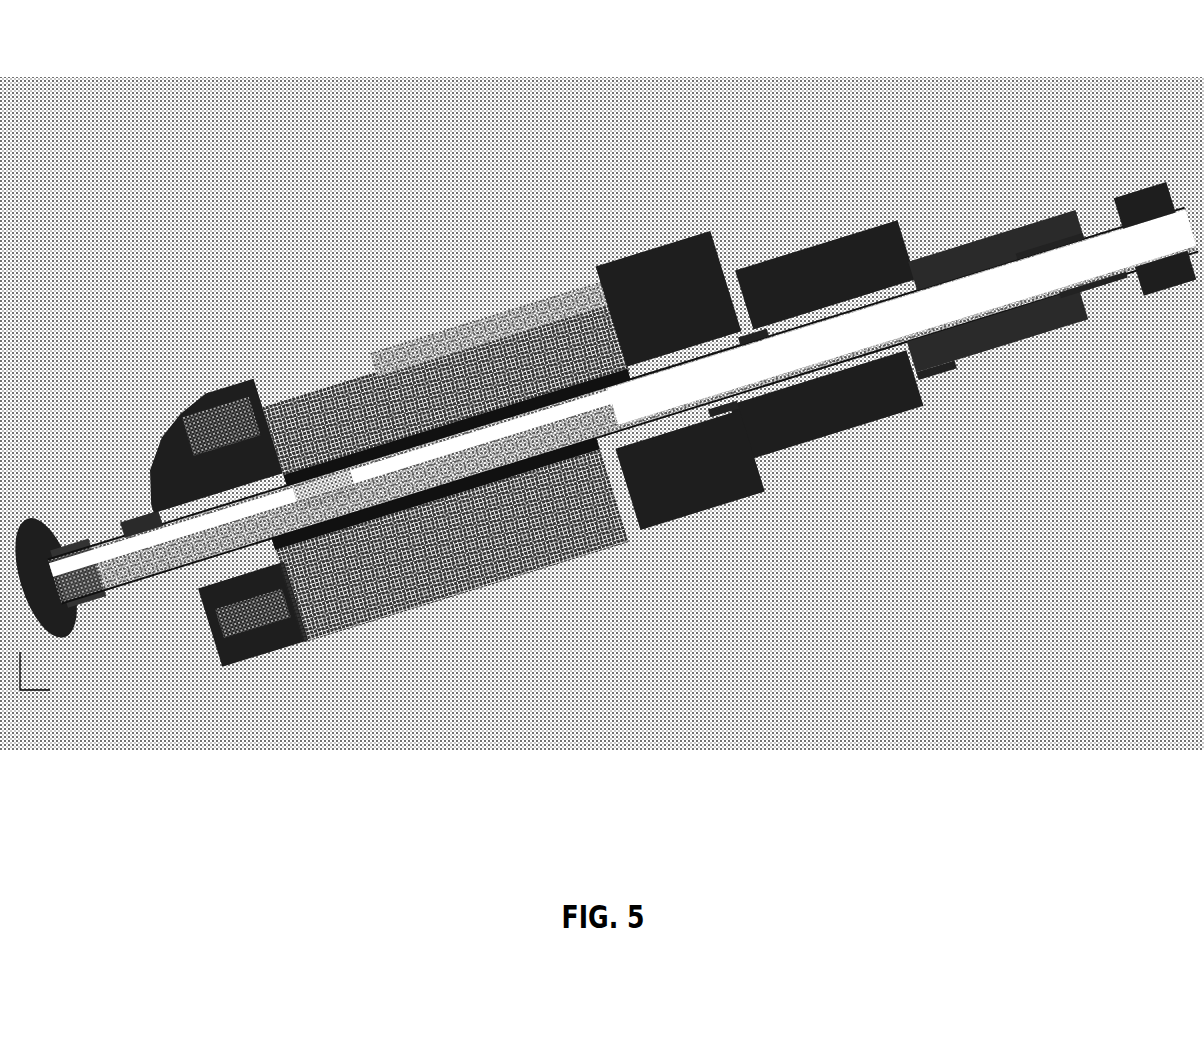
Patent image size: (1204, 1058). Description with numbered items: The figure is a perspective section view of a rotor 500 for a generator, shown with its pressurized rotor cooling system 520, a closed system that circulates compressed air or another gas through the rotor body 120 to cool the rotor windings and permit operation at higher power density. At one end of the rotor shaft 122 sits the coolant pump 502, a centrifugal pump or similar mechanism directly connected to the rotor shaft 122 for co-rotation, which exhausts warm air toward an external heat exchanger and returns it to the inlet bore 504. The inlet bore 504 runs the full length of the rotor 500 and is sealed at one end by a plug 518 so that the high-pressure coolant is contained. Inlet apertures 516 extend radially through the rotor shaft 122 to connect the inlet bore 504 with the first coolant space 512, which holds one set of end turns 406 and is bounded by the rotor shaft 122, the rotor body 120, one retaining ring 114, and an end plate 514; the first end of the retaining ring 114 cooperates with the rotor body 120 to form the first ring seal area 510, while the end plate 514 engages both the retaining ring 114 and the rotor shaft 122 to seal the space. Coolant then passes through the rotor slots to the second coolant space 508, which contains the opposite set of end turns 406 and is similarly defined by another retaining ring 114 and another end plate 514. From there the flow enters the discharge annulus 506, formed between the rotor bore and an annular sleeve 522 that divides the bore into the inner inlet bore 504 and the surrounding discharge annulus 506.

The rotor 500 is at (866, 85).
The coolant pump 502 is at (1150, 195).
The inlet bore 504 is at (1048, 292).
The discharge annulus 506 is at (1045, 235).
The second coolant space 508 is at (608, 298).
The first ring seal area 510 is at (565, 280).
The first coolant space 512 is at (300, 390).
The end plate 514 is at (245, 405).
The inlet apertures 516 is at (375, 480).
The plug 518 is at (80, 595).
The rotor cooling system 520 is at (950, 405).
The annular sleeve 522 is at (735, 395).
The retaining ring 114 is at (320, 380).
The rotor body 120 is at (530, 540).
The rotor shaft 122 is at (1085, 300).
The end turns 406 is at (690, 500).